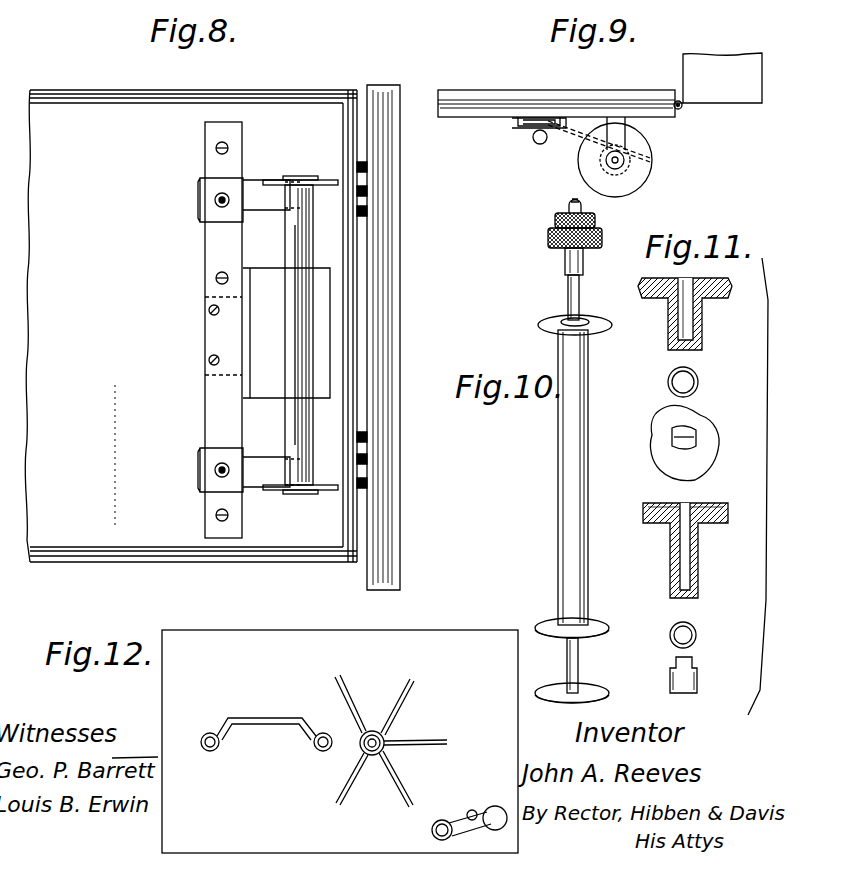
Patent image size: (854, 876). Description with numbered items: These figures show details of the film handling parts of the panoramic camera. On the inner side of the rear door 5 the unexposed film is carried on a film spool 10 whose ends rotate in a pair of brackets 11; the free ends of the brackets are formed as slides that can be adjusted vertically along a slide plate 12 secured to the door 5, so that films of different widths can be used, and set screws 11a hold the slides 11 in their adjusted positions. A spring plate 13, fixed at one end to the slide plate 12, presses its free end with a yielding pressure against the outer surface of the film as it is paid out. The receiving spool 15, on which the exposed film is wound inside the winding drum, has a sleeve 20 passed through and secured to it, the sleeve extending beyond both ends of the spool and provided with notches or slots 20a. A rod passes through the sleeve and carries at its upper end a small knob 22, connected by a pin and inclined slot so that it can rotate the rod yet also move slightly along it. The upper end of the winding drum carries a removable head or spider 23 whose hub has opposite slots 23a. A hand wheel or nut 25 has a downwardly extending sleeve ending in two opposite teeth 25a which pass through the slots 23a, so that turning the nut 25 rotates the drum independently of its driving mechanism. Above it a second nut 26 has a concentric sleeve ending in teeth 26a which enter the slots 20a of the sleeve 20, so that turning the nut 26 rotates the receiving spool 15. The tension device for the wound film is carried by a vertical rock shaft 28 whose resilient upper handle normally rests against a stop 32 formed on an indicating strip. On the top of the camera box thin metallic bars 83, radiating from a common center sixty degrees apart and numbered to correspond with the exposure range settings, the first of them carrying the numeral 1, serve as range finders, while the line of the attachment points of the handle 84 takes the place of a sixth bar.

In FIG. 8, the cover 1 is at (383, 93).
In FIG. 9, the cover 1 is at (720, 104).
In FIG. 12, the cover 1 is at (178, 663).
In FIG. 8, the door 5 is at (191, 326).
In FIG. 9, the door 5 is at (475, 92).
In FIG. 8, the film spool 10 is at (300, 226).
In FIG. 9, the film spool 10 is at (638, 178).
In FIG. 8, the brackets 11 is at (205, 192).
In FIG. 9, the brackets 11 is at (528, 127).
In FIG. 8, the set screws 11a is at (216, 204).
In FIG. 9, the set screws 11a is at (546, 145).
In FIG. 8, the slide plate 12 is at (210, 242).
In FIG. 9, the slide plate 12 is at (541, 120).
In FIG. 8, the spring plate 13 is at (240, 352).
In FIG. 9, the spring plate 13 is at (575, 131).
In FIG. 10, the receiving spool 15 is at (588, 498).
In FIG. 10, the sleeve 20 is at (572, 290).
In FIG. 11, the sleeve 20 is at (692, 622).
In FIG. 11, the notches or slots 20a is at (671, 636).
In FIG. 10, the small knob 22 is at (585, 206).
In FIG. 12, the small knob 22 is at (385, 738).
In FIG. 11, the head or spider 23 is at (706, 415).
In FIG. 11, the slots 23a is at (698, 436).
In FIG. 10, the hand wheel or nut 25 is at (548, 238).
In FIG. 11, the hand wheel or nut 25 is at (730, 290).
In FIG. 11, the engaging teeth or projections 25a is at (695, 348).
In FIG. 10, the second hand wheel or nut 26 is at (555, 221).
In FIG. 11, the second hand wheel or nut 26 is at (729, 514).
In FIG. 11, the teeth or projections 26a is at (684, 596).
In FIG. 12, the rock shaft 28 is at (432, 832).
In FIG. 12, the stop 32 is at (474, 810).
In FIG. 12, the metallic bars 83 is at (396, 700).
In FIG. 12, the handle 84 is at (250, 720).